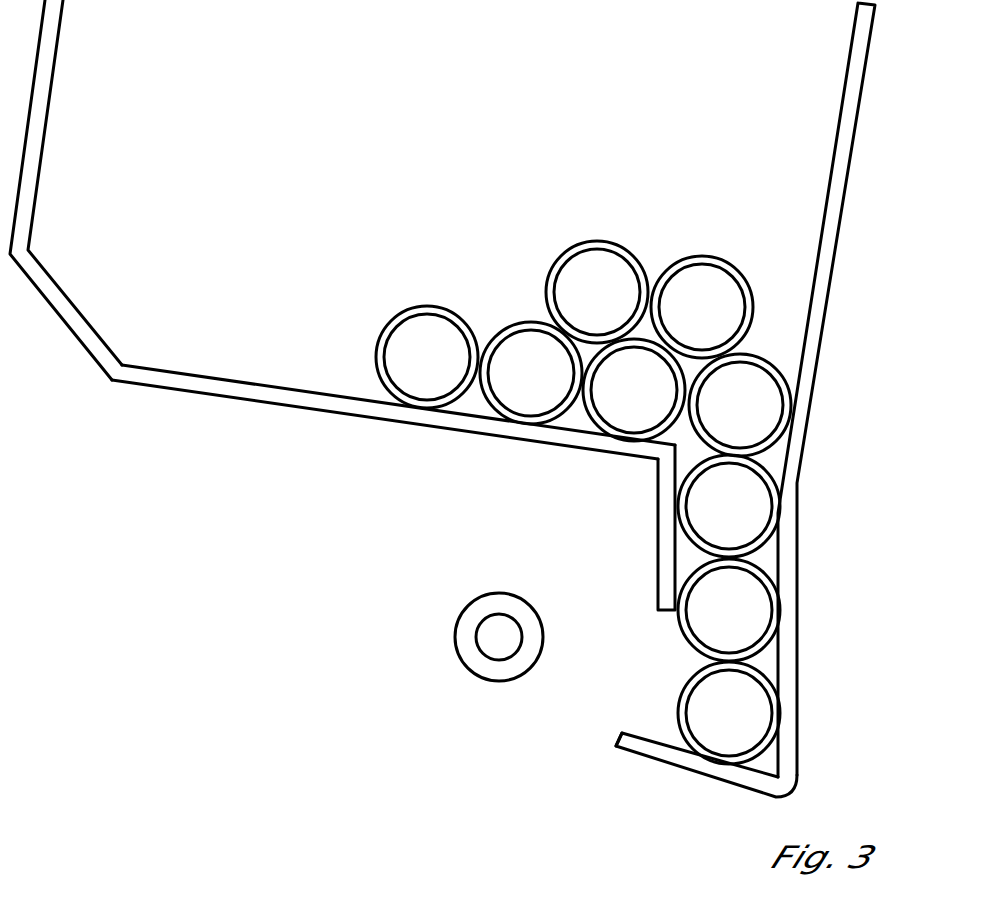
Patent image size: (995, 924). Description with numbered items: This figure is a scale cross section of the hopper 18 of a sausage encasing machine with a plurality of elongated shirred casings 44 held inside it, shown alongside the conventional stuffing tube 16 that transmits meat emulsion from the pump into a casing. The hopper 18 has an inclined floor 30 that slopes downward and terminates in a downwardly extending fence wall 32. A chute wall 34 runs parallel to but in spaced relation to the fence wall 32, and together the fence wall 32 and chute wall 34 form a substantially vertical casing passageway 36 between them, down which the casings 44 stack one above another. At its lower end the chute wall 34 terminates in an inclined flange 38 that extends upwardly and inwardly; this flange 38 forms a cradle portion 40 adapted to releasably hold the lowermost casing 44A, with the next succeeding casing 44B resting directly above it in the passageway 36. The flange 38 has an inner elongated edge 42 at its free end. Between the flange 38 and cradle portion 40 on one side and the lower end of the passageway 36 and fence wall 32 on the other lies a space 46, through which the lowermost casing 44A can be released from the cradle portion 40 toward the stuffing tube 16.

The stuffing tube 16 is at (466, 612).
The hopper 18 is at (304, 147).
The inclined floor 30 is at (325, 413).
The fence wall 32 is at (658, 537).
The chute wall 34 is at (798, 636).
The casing passageway 36 is at (766, 560).
The inclined flange 38 is at (675, 768).
The cradle portion 40 is at (770, 762).
The inner elongated edge 42 is at (617, 738).
The shirred casings 44 is at (675, 262).
The lowermost casing 44A is at (768, 714).
The next succeeding casing 44B is at (768, 612).
The space 46 is at (630, 653).